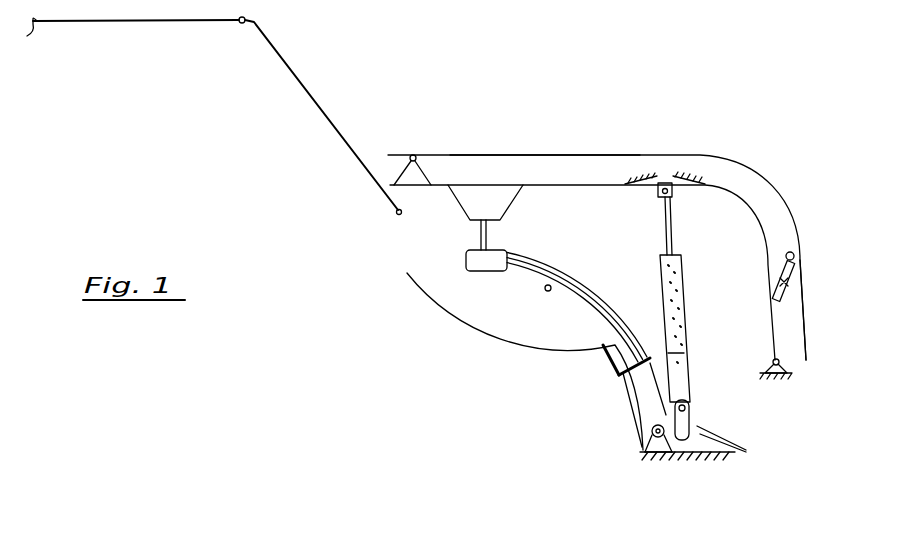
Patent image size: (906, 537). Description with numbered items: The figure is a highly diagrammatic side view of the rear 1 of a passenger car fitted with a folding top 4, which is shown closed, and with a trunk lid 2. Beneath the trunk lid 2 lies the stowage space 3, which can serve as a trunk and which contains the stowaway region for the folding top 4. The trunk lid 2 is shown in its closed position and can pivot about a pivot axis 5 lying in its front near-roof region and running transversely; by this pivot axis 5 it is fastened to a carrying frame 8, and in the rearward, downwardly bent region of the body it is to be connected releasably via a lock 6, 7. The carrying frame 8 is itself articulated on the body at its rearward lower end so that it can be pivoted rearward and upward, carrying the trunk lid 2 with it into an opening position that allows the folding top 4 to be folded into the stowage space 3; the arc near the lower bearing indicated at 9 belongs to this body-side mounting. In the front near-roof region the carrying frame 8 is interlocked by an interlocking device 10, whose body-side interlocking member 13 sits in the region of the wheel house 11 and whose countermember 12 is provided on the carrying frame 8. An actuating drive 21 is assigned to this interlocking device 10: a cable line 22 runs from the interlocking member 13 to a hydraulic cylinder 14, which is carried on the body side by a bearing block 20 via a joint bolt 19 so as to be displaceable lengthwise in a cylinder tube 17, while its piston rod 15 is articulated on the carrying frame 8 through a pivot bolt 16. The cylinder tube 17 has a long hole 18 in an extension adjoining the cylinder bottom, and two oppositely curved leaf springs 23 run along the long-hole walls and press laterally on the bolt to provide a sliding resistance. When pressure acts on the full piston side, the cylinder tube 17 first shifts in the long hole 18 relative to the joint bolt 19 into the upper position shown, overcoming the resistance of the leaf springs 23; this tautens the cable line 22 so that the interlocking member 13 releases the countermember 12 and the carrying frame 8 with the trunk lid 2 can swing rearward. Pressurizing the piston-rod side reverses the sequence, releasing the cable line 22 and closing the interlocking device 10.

The rear of the passenger car 1 is at (700, 110).
The trunk lid 2 is at (622, 155).
The stowage space 3 is at (641, 277).
The folding top 4 is at (324, 88).
The pivot axis 5 is at (423, 152).
The lock 6 is at (787, 256).
The lock 7 is at (773, 305).
The carrying frame 8 is at (563, 184).
The bearing support 9 is at (790, 364).
The interlocking device 10 is at (445, 234).
The wheel house 11 is at (545, 290).
The countermember 12 is at (495, 200).
The interlocking member 13 is at (478, 266).
The hydraulic cylinder 14 is at (698, 296).
The piston rod 15 is at (672, 216).
The pivot bolt 16 is at (672, 196).
The cylinder tube 17 is at (690, 395).
The long hole 18 is at (690, 447).
The joint bolt 19 is at (668, 410).
The bearing block 20 is at (660, 447).
The actuating drive 21 is at (704, 412).
The cable line 22 is at (592, 326).
The leaf springs 23 is at (737, 443).